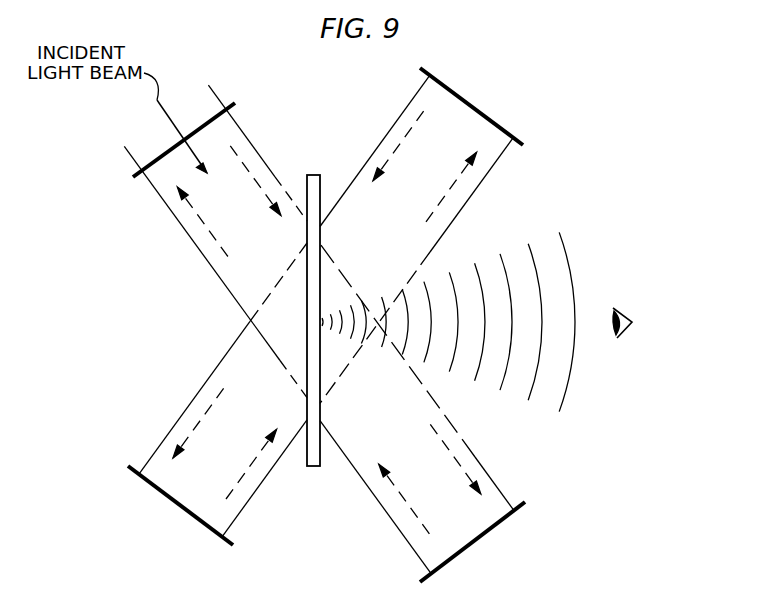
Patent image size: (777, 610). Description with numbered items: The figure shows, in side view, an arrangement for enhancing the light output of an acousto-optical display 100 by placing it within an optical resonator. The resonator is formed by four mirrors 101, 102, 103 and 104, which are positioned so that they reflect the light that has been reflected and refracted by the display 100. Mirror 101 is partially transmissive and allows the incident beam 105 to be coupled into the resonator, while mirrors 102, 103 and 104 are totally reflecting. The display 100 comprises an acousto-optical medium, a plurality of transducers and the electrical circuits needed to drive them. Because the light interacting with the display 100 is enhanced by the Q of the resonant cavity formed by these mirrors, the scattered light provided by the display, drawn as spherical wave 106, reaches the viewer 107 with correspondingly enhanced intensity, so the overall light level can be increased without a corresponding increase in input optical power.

The acousto-optical display 100 is at (315, 173).
The mirror 101 is at (203, 125).
The mirror 102 is at (172, 502).
The mirror 103 is at (493, 527).
The mirror 104 is at (490, 117).
The incident beam 105 is at (167, 118).
The spherical wave 106 is at (505, 257).
The viewer 107 is at (619, 315).